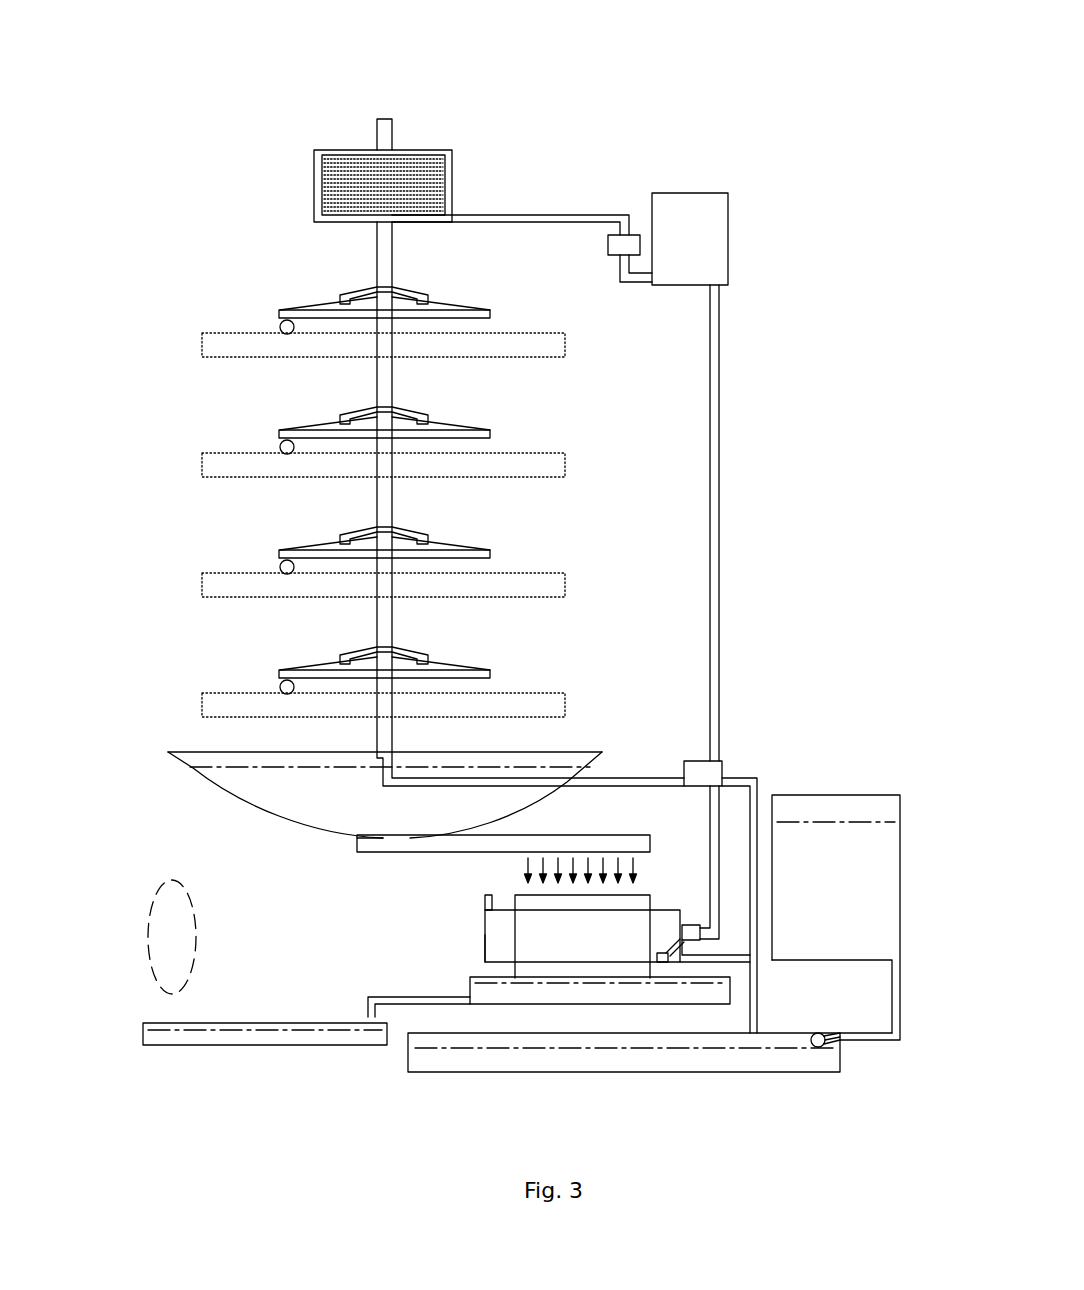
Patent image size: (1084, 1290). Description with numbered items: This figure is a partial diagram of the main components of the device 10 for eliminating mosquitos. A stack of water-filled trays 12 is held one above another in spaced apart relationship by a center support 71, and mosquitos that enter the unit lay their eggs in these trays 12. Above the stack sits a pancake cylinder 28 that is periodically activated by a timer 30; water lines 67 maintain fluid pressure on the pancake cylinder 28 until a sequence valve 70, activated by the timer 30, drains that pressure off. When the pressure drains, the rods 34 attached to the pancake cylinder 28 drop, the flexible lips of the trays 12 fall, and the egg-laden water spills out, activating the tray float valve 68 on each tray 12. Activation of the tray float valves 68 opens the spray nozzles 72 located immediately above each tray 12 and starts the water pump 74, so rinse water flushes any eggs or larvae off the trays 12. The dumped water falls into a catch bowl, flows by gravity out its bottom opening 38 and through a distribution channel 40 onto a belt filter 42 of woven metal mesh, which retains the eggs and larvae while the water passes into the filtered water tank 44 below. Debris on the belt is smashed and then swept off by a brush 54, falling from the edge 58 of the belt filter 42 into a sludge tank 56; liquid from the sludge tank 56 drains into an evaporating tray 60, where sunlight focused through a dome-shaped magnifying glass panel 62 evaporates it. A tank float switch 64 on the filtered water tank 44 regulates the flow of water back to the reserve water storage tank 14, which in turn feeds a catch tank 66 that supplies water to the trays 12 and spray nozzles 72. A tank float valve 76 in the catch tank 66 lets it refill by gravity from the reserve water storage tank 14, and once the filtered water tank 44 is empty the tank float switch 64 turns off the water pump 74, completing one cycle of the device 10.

The device 10 is at (650, 117).
The trays 12 is at (202, 345).
The reserve water storage tank 14 is at (847, 795).
The pancake cylinder 28 is at (420, 163).
The timer 30 is at (672, 193).
The rods 34 is at (227, 796).
The bottom opening 38 is at (382, 836).
The distribution channel 40 is at (422, 852).
The belt filter 42 is at (655, 908).
The filtered water tank 44 is at (513, 945).
The brush 54 is at (487, 898).
The sludge tank 56 is at (468, 987).
The edge 58 is at (485, 948).
The evaporating tray 60 is at (143, 1030).
The magnifying glass panel 62 is at (170, 880).
The tank float switch 64 is at (698, 923).
The catch tank 66 is at (833, 1055).
The water lines 67 is at (500, 215).
The tray float valve 68 is at (278, 325).
The sequence valve 70 is at (608, 248).
The center support 71 is at (393, 388).
The spray nozzles 72 is at (423, 293).
The water pump 74 is at (698, 761).
The tank float valve 76 is at (818, 1033).